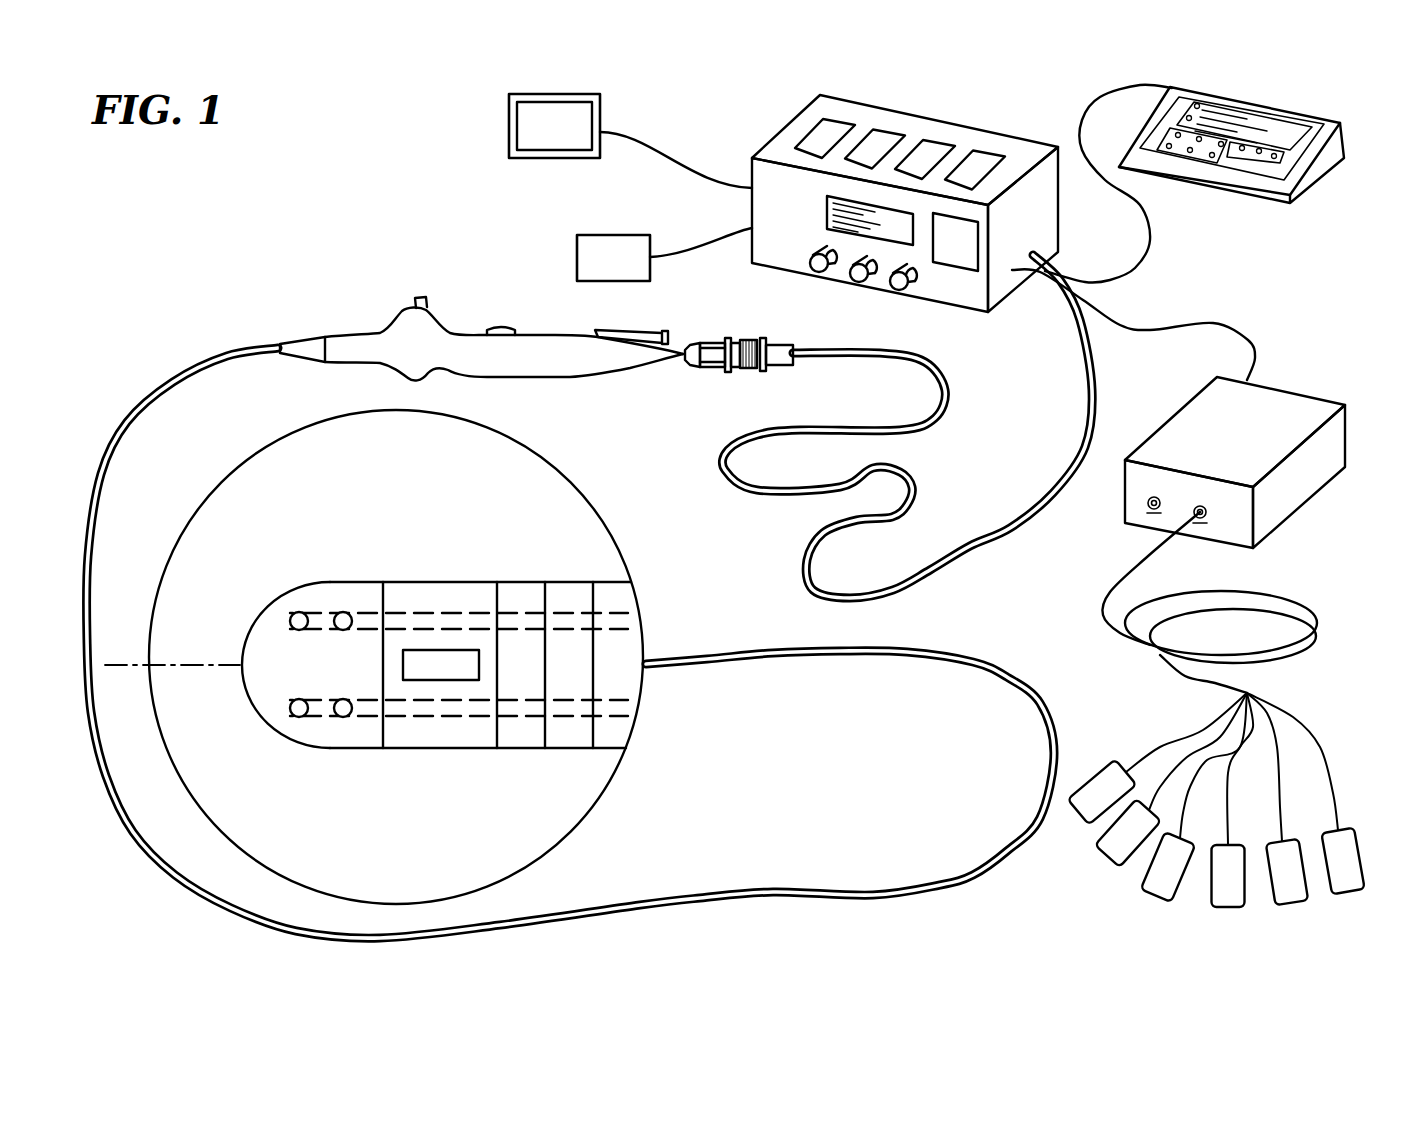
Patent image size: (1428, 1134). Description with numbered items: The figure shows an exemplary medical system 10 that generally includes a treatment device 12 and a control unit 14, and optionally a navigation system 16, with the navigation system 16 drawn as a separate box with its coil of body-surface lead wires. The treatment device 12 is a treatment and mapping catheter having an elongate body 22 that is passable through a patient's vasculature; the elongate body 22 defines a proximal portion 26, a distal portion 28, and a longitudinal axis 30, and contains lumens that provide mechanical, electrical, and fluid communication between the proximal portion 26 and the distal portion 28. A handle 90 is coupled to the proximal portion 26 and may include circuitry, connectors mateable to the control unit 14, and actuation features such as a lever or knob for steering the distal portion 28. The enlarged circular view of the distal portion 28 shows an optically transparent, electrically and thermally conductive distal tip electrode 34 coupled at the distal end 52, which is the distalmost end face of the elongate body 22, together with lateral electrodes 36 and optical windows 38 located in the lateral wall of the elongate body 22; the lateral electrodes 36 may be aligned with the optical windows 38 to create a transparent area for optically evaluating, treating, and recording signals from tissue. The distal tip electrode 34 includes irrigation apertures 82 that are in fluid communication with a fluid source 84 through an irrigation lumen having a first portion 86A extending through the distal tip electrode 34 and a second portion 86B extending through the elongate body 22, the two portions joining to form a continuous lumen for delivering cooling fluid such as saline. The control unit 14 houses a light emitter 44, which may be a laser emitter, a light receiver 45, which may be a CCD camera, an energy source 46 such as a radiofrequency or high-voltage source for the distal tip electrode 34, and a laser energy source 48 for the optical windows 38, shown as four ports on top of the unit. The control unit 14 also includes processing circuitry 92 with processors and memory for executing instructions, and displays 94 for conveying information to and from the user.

The medical system 10 is at (1385, 920).
The treatment device 12 is at (523, 323).
The control unit 14 is at (861, 188).
The navigation system 16 is at (1352, 385).
The elongate body 22 is at (570, 643).
The proximal portion 26 is at (147, 405).
The distal portion 28 is at (391, 657).
The longitudinal axis 30 is at (133, 668).
The distal tip electrode 34 is at (328, 742).
The lateral electrodes 36 is at (616, 598).
The optical windows 38 is at (423, 657).
The light emitter 44 is at (835, 125).
The light receiver 45 is at (883, 140).
The energy source 46 is at (925, 152).
The laser energy source 48 is at (982, 160).
The distal end 52 is at (380, 731).
The irrigation apertures 82 is at (343, 612).
The fluid source 84 is at (600, 271).
The first portion of irrigation lumen 86A is at (322, 718).
The second portion of irrigation lumen 86B is at (458, 718).
The handle 90 is at (425, 371).
The processing circuitry 92 is at (944, 256).
The displays 94 is at (540, 140).